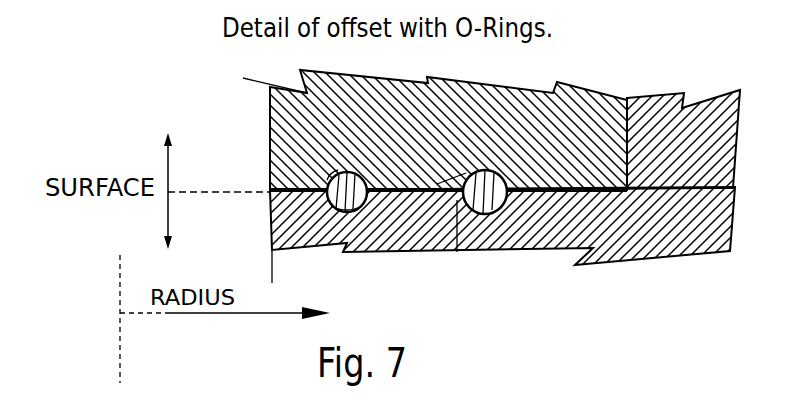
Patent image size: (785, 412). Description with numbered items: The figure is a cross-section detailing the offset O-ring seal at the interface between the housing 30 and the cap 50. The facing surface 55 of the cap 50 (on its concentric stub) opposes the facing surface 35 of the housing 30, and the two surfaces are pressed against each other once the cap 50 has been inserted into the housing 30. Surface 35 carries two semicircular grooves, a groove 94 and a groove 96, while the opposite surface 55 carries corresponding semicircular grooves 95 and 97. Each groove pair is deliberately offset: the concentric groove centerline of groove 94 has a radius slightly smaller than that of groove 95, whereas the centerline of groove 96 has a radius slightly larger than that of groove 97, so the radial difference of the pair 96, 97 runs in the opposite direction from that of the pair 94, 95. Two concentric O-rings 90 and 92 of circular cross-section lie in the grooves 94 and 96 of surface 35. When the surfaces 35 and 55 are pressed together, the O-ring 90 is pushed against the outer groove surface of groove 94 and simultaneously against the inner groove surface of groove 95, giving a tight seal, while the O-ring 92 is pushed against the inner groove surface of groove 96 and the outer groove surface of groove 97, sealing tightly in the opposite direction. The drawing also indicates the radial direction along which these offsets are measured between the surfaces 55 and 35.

The cap 50 is at (282, 103).
The housing 30 is at (282, 227).
The surface of concentric stub 55 is at (168, 152).
The surface of housing 35 is at (168, 232).
The O-ring 90 is at (365, 175).
The O-ring 92 is at (503, 180).
The groove 94 is at (362, 206).
The groove 96 is at (457, 252).
The groove 95 is at (338, 170).
The groove 97 is at (437, 184).